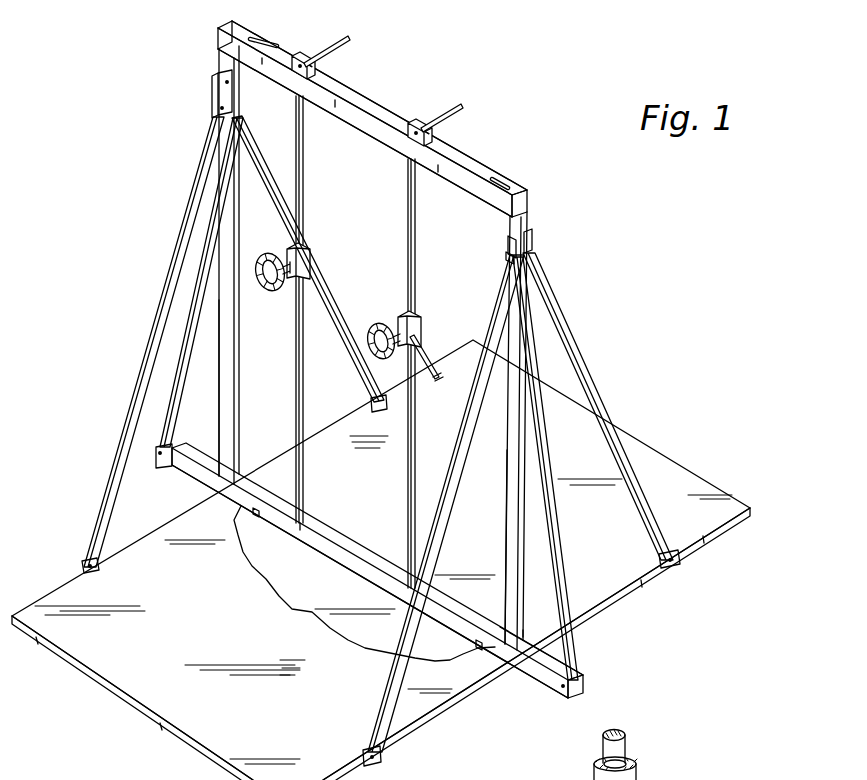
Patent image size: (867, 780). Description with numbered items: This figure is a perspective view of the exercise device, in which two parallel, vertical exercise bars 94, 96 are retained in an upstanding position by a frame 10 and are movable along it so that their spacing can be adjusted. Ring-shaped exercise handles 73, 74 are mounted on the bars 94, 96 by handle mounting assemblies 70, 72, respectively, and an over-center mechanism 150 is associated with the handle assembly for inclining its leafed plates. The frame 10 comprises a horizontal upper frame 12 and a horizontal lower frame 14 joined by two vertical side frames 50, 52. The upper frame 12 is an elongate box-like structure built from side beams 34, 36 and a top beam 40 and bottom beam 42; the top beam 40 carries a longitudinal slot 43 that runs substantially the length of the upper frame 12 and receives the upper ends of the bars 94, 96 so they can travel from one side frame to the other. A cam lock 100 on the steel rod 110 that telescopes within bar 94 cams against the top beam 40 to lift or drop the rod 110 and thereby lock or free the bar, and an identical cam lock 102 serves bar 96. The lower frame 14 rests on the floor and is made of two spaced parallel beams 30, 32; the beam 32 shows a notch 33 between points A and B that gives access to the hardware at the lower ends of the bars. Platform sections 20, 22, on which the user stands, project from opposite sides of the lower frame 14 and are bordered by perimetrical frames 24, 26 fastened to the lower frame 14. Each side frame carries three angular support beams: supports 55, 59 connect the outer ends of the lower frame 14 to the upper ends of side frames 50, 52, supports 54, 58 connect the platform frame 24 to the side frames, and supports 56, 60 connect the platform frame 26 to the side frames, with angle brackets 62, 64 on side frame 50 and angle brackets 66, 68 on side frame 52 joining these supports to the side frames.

The frame 10 is at (213, 59).
The upper frame 12 is at (364, 98).
The lower frame 14 is at (351, 542).
The platform section 20 is at (677, 473).
The platform section 22 is at (142, 683).
The perimetrical frame 24 is at (734, 522).
The perimetrical frame 26 is at (427, 718).
The beam 30 is at (562, 655).
The beam 32 is at (543, 675).
The notch 33 is at (358, 567).
The side beam 34 is at (528, 203).
The side beam 36 is at (508, 207).
The top beam 40 is at (511, 187).
The bottom beam 42 is at (477, 197).
The longitudinal slot 43 is at (453, 152).
The side frame 50 is at (510, 517).
The side frame 52 is at (234, 356).
The angular support beam 54 is at (588, 362).
The angular support beam 55 is at (557, 537).
The angular support beam 56 is at (468, 413).
The angular support beam 58 is at (331, 300).
The angular support beam 59 is at (182, 404).
The angular support beam 60 is at (156, 335).
The angle bracket 62 is at (532, 235).
The angle bracket 64 is at (513, 256).
The angle bracket 66 is at (238, 87).
The angle bracket 68 is at (216, 94).
The handle mounting assembly 70 is at (290, 280).
The handle mounting assembly 72 is at (399, 320).
The exercise handle 73 is at (267, 257).
The exercise handle 74 is at (372, 375).
The exercise bar 94 is at (304, 192).
The exercise bar 96 is at (412, 193).
The cam lock 100 is at (323, 55).
The cam lock 102 is at (446, 113).
The steel rod 110 is at (622, 745).
The over-center mechanism 150 is at (425, 342).
The point A is at (259, 515).
The point B is at (475, 642).